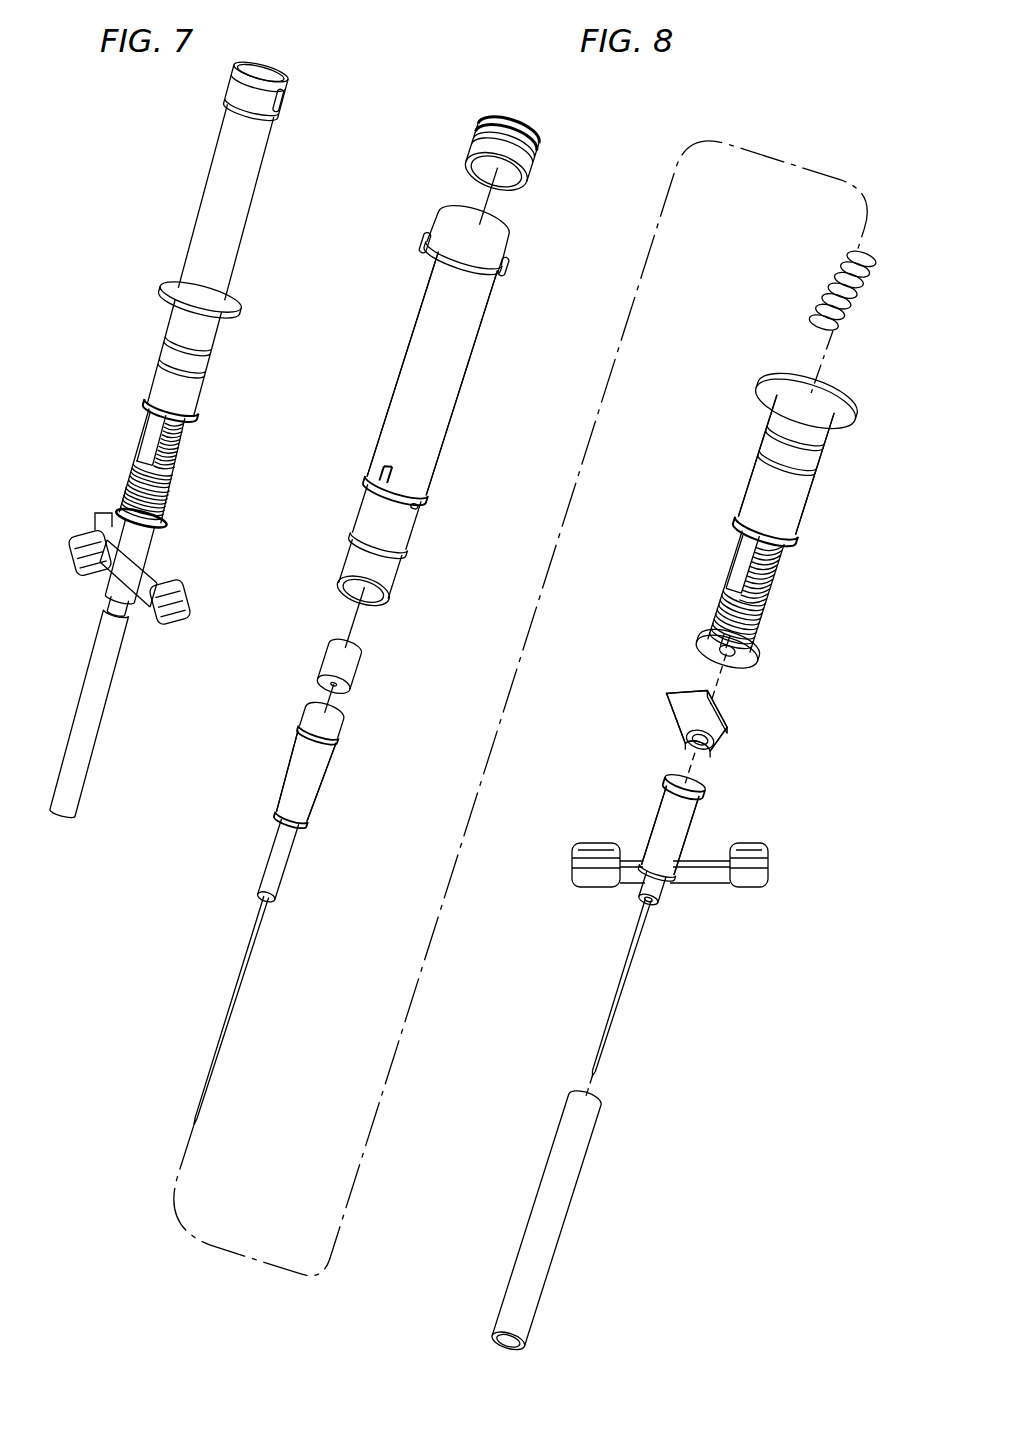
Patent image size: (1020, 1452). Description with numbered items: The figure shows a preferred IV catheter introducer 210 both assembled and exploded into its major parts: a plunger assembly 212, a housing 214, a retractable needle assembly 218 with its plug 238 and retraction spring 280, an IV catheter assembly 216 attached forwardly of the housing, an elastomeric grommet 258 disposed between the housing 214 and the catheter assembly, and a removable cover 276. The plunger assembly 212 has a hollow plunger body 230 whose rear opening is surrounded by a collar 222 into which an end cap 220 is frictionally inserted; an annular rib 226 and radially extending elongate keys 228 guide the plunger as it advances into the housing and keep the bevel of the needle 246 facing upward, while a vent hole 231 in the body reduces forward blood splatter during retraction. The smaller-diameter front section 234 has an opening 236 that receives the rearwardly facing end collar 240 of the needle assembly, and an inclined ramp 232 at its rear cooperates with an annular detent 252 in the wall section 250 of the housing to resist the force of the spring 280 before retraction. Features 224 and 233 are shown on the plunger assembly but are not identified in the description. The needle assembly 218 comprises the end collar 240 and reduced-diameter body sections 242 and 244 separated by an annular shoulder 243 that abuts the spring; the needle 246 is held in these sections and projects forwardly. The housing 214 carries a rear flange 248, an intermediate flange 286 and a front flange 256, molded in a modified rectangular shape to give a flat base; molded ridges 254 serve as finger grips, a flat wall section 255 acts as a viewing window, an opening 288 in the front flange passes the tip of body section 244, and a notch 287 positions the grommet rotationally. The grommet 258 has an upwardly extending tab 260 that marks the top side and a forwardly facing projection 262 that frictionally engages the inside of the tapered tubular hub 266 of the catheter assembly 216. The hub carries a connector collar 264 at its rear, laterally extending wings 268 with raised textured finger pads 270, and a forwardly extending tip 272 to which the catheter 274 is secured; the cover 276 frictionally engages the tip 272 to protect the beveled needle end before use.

In FIG. 7, the IV catheter introducer 210 is at (101, 349).
In FIG. 8, the IV catheter introducer 210 is at (667, 103).
In FIG. 7, the plunger assembly 212 is at (195, 191).
In FIG. 8, the plunger assembly 212 is at (392, 368).
In FIG. 7, the housing 214 is at (212, 382).
In FIG. 8, the housing 214 is at (741, 468).
In FIG. 7, the IV catheter assembly 216 is at (149, 558).
In FIG. 8, the IV catheter assembly 216 is at (706, 831).
In FIG. 8, the retractable needle assembly 218 is at (284, 765).
In FIG. 7, the end cap 220 is at (265, 70).
In FIG. 8, the end cap 220 is at (526, 133).
In FIG. 7, the collar 222 is at (233, 88).
In FIG. 8, the collar 222 is at (448, 232).
In FIG. 7, the tabs 224 is at (283, 100).
In FIG. 8, the tabs 224 is at (420, 258).
In FIG. 8, the annular rib 226 is at (418, 484).
In FIG. 8, the elongate keys 228 is at (383, 470).
In FIG. 8, the plunger body 230 is at (455, 367).
In FIG. 8, the vent hole 231 is at (420, 508).
In FIG. 8, the inclined ramp 232 is at (352, 548).
In FIG. 8, the lower body 233 is at (405, 527).
In FIG. 8, the front section 234 is at (390, 575).
In FIG. 8, the opening 236 is at (352, 598).
In FIG. 8, the plug 238 is at (358, 660).
In FIG. 8, the end collar 240 is at (332, 735).
In FIG. 8, the body section 242 is at (318, 775).
In FIG. 8, the annular shoulder 243 is at (292, 818).
In FIG. 8, the body section 244 is at (262, 880).
In FIG. 8, the needle 246 is at (240, 955).
In FIG. 8, the rear flange 248 is at (858, 403).
In FIG. 8, the wall section 250 is at (810, 497).
In FIG. 8, the annular detent 252 is at (823, 468).
In FIG. 7, the molded ridges 254 is at (165, 505).
In FIG. 8, the molded ridges 254 is at (763, 627).
In FIG. 7, the flat wall section 255 is at (150, 436).
In FIG. 8, the flat wall section 255 is at (750, 545).
In FIG. 8, the front flange 256 is at (755, 657).
In FIG. 8, the elastomeric grommet 258 is at (682, 687).
In FIG. 8, the upwardly extending tab 260 is at (678, 722).
In FIG. 8, the forwardly facing projection 262 is at (713, 732).
In FIG. 8, the connector collar 264 is at (667, 785).
In FIG. 8, the tubular hub 266 is at (665, 822).
In FIG. 7, the wings 268 is at (100, 577).
In FIG. 8, the wings 268 is at (630, 885).
In FIG. 7, the finger pads 270 is at (83, 545).
In FIG. 8, the finger pads 270 is at (575, 860).
In FIG. 8, the tip 272 is at (668, 900).
In FIG. 8, the catheter 274 is at (625, 1003).
In FIG. 7, the cover 276 is at (80, 760).
In FIG. 8, the cover 276 is at (560, 1136).
In FIG. 8, the retraction spring 280 is at (833, 272).
In FIG. 8, the flange 286 is at (797, 550).
In FIG. 8, the notch 287 is at (703, 657).
In FIG. 8, the opening 288 is at (730, 665).